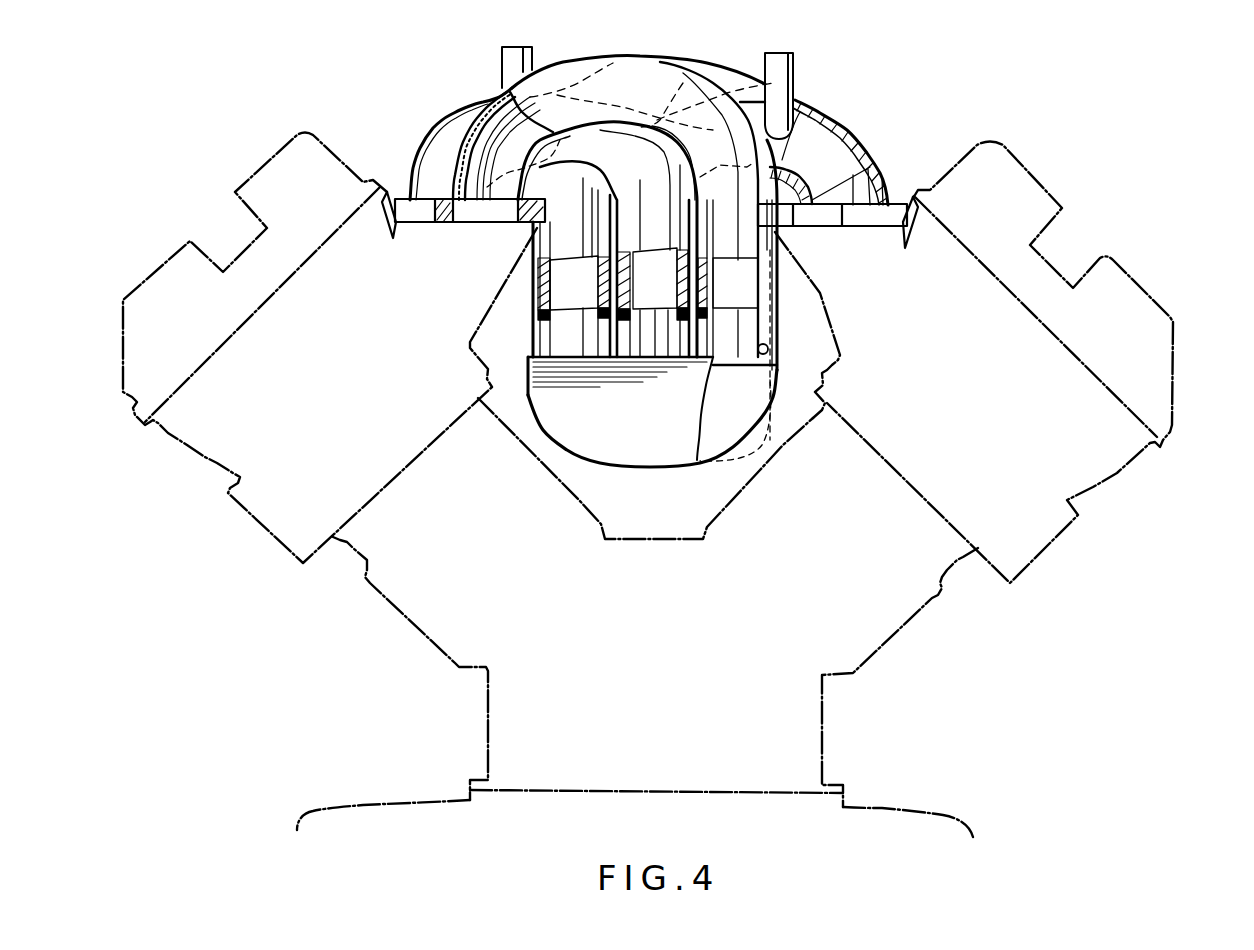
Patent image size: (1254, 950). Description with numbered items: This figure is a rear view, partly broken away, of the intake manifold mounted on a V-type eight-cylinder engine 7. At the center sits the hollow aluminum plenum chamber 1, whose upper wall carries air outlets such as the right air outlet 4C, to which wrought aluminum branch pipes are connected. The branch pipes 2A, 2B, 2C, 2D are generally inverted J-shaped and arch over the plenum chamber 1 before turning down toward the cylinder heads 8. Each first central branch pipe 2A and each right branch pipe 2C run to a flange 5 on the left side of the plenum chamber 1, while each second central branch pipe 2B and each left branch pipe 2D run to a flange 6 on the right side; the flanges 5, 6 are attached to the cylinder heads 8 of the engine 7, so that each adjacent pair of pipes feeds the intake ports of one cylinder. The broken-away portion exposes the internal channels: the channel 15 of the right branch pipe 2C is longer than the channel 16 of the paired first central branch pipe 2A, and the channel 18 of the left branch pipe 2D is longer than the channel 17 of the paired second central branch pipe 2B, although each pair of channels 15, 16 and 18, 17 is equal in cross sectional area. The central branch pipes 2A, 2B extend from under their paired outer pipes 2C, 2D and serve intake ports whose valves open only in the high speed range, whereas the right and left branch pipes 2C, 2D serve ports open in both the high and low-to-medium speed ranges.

The plenum chamber 1 is at (655, 482).
The first central branch pipe 2A is at (436, 132).
The second central branch pipe 2B is at (855, 135).
The right branch pipe 2C is at (601, 57).
The left branch pipe 2D is at (722, 62).
The right air outlet 4C is at (768, 350).
The flange 5 is at (397, 185).
The flange 6 is at (905, 197).
The engine 7 is at (908, 636).
The cylinder head 8 is at (217, 463).
The channel 15 is at (753, 300).
The channel 16 is at (670, 297).
The channel 17 is at (840, 168).
The channel 18 is at (590, 300).